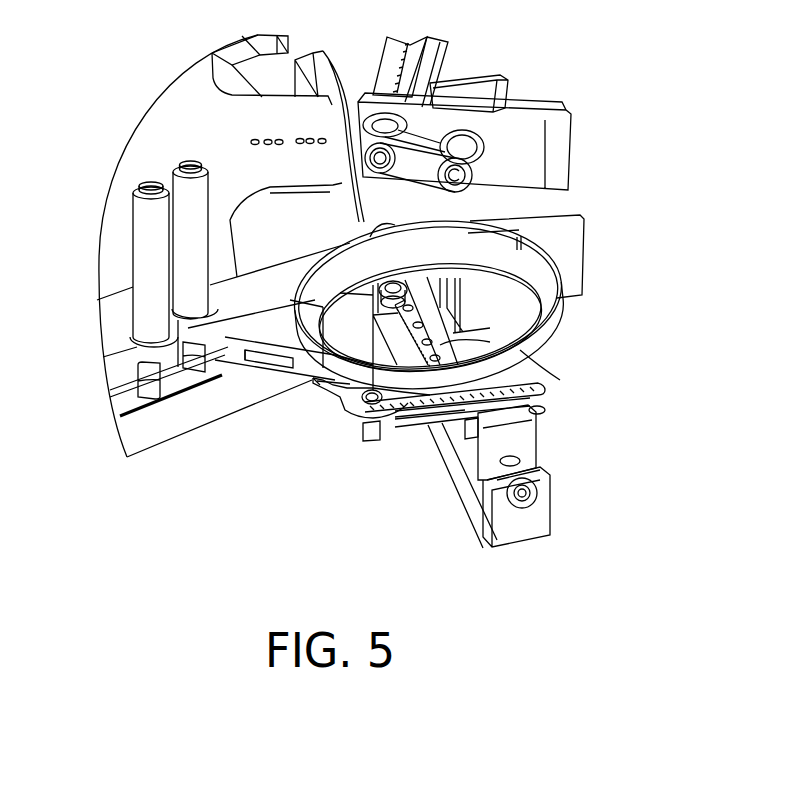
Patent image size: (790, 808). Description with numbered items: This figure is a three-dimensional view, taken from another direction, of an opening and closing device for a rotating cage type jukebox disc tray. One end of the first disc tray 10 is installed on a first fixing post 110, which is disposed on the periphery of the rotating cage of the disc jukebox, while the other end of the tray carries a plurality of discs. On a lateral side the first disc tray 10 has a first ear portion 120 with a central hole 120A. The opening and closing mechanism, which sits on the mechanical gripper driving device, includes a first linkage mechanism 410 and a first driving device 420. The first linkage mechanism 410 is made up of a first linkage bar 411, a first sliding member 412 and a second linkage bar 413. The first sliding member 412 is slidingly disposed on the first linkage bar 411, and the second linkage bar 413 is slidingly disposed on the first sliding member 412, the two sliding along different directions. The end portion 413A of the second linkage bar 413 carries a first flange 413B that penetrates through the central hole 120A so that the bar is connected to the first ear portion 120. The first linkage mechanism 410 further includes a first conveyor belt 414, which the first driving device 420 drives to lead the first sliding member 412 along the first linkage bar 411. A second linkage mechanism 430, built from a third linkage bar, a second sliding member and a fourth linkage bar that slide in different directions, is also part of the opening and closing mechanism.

The first disc tray 10 is at (552, 338).
The first fixing post 110 is at (187, 163).
The first ear portion 120 is at (395, 420).
The central hole 120A is at (330, 378).
The first linkage mechanism 410 is at (580, 525).
The first linkage bar 411 is at (500, 348).
The first sliding member 412 is at (272, 303).
The second linkage bar 413 is at (427, 433).
The end portion 413A is at (368, 435).
The first flange 413B is at (338, 398).
The first conveyor belt 414 is at (540, 386).
The first driving device 420 is at (562, 305).
The second linkage mechanism 430 is at (580, 107).